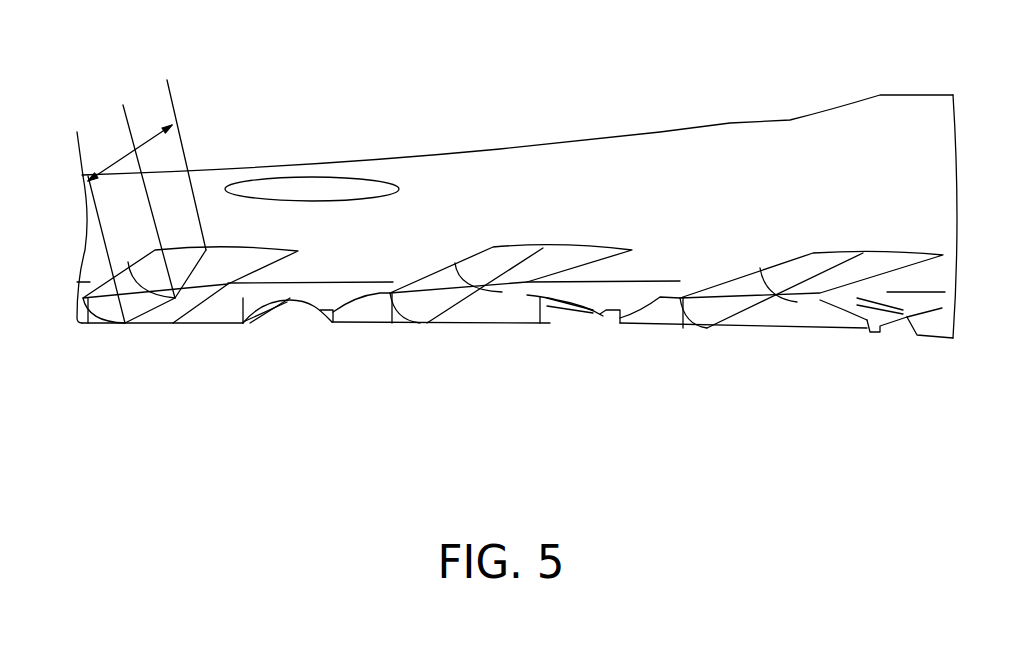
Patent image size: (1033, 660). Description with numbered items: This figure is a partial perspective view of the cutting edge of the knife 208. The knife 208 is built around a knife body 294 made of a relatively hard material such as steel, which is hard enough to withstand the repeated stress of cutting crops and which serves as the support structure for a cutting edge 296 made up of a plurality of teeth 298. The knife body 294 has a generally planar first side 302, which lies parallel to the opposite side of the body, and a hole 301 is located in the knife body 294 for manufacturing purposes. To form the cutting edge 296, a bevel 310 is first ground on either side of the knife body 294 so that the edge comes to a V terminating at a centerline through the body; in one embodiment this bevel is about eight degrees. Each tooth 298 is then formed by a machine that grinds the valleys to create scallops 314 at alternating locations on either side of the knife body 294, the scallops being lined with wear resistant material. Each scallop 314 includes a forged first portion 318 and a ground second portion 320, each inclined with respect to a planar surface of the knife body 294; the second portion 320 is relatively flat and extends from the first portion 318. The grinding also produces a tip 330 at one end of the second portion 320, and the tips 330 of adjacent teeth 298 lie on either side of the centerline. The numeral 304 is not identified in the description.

The knife 208 is at (583, 405).
The knife body 294 is at (730, 112).
The cutting edge 296 is at (280, 308).
The teeth 298 is at (145, 380).
The hole 301 is at (323, 185).
The first side 302 is at (535, 162).
The body portion 304 is at (328, 258).
The bevel 310 is at (620, 297).
The scallops 314 is at (467, 249).
The first portion 318 is at (158, 128).
The second portion 320 is at (112, 162).
The tip 330 is at (610, 323).